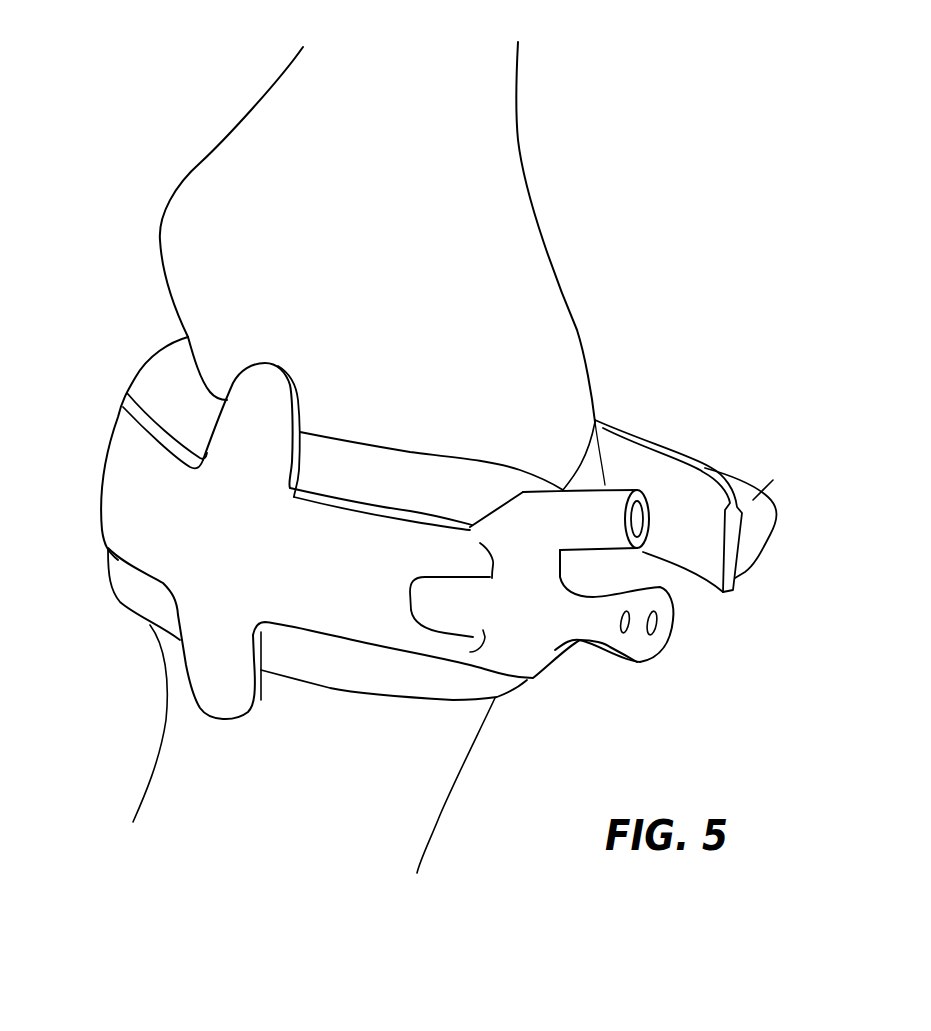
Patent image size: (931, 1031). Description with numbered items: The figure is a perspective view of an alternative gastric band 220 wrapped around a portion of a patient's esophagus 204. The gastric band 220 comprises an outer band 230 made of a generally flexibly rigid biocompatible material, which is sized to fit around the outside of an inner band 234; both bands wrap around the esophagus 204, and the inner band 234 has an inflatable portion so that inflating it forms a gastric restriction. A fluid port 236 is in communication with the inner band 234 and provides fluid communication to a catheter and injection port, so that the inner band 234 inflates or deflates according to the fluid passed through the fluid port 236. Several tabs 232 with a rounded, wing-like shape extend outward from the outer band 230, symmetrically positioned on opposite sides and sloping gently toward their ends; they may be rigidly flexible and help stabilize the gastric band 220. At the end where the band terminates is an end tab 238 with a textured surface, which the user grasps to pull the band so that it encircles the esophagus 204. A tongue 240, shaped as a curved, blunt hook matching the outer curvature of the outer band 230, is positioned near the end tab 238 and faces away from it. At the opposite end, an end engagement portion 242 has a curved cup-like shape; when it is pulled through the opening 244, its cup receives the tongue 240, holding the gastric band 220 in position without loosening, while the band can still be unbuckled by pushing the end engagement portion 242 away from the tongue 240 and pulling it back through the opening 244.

The esophagus 204 is at (498, 118).
The gastric band 220 is at (677, 339).
The outer band 230 is at (118, 467).
The tabs 232 is at (207, 687).
The inner band 234 is at (130, 593).
The fluid port 236 is at (613, 500).
The end tab 238 is at (637, 640).
The tongue 240 is at (445, 610).
The end engagement portion 242 is at (755, 500).
The opening 244 is at (487, 564).